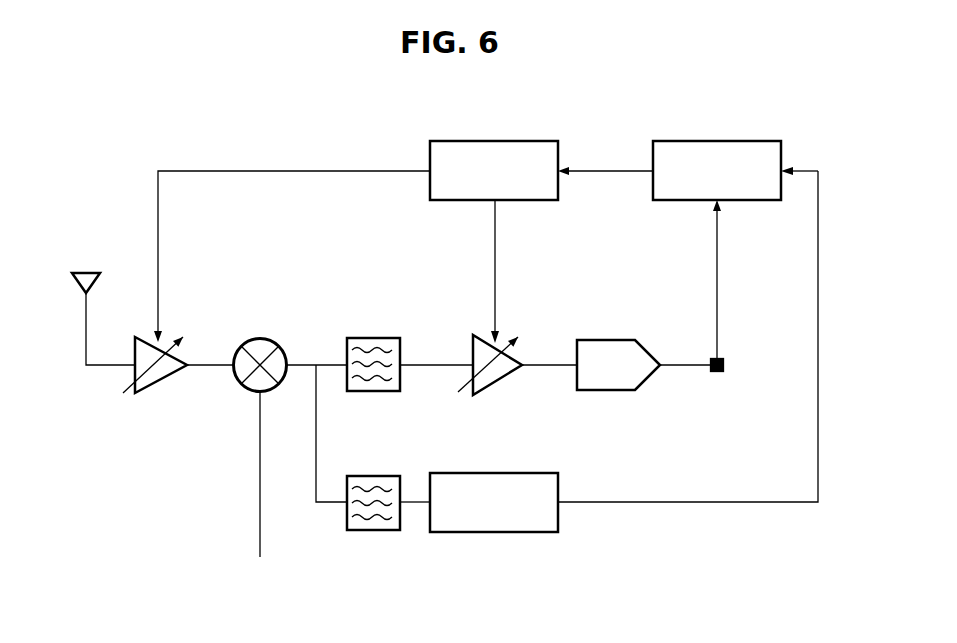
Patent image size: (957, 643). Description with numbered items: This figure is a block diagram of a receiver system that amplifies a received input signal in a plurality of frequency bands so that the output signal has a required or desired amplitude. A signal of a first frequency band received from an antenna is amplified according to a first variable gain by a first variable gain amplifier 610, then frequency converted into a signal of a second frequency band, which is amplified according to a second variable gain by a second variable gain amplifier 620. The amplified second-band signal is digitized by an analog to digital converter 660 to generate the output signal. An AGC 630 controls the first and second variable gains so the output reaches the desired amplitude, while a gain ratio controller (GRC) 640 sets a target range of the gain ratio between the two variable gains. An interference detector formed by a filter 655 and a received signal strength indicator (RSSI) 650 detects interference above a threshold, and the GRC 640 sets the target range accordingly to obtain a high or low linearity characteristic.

The first variable gain amplifier 610 is at (165, 385).
The second variable gain amplifier 620 is at (473, 333).
The AGC 630 is at (718, 140).
The gain ratio controller (GRC) 640 is at (497, 140).
The received signal strength indicator (RSSI) 650 is at (497, 472).
The filter 655 is at (373, 475).
The analog to digital converter 660 is at (607, 338).